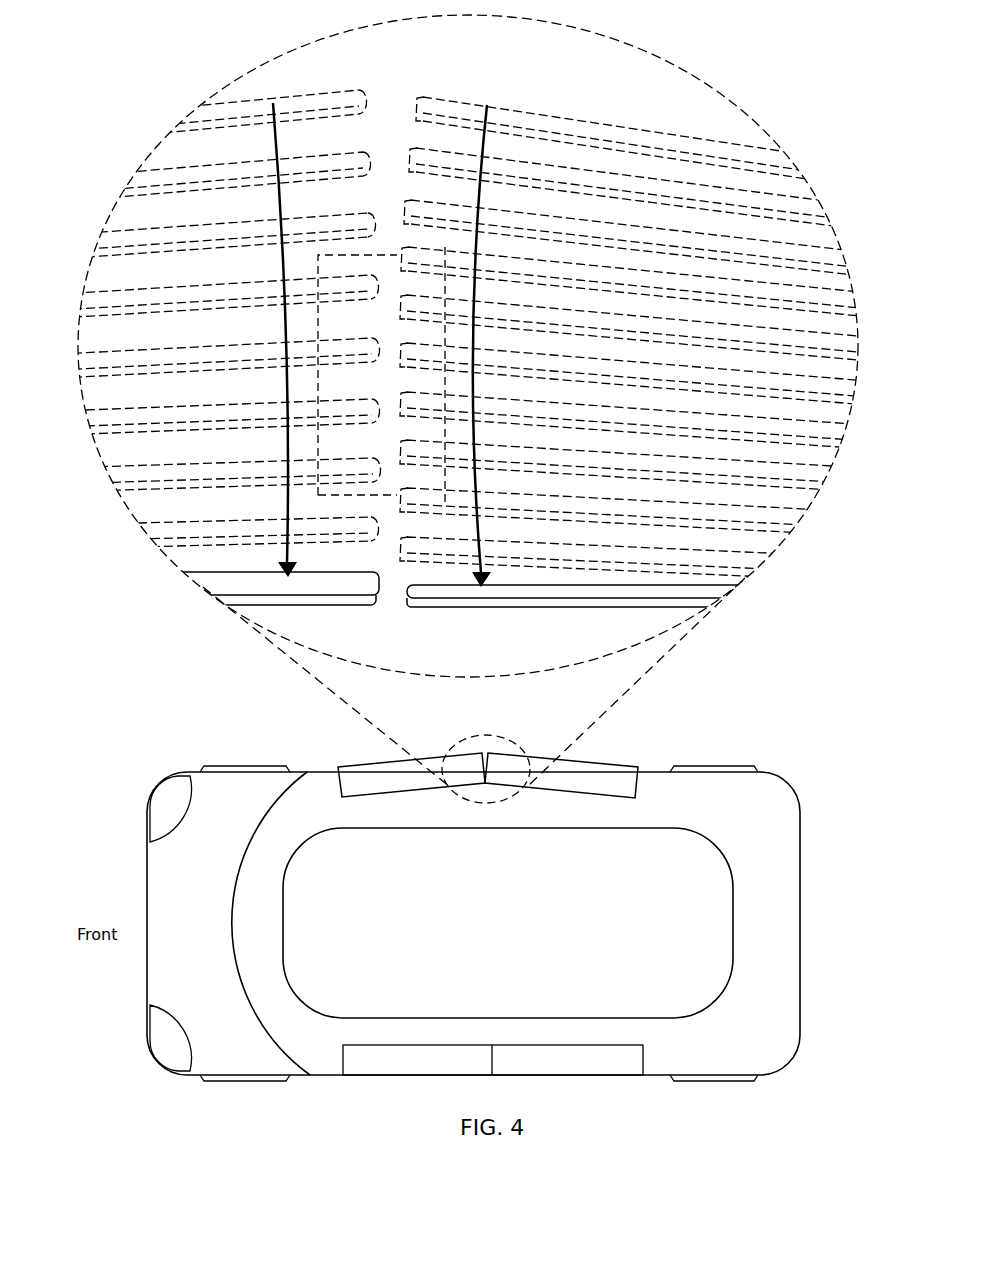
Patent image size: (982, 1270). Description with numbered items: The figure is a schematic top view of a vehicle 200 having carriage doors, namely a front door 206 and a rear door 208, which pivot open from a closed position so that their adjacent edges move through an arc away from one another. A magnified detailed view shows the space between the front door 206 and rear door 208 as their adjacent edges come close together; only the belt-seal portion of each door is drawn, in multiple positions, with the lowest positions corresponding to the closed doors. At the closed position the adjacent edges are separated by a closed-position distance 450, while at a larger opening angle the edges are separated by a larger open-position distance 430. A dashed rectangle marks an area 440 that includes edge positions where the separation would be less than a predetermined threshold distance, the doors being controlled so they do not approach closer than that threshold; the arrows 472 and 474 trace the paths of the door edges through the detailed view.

The vehicle 200 is at (142, 736).
The front door 206 is at (388, 783).
The rear door 208 is at (617, 783).
The open-position distance 430 is at (382, 115).
The area 440 is at (318, 323).
The closed-position distance 450 is at (395, 598).
The first airflow path 472 is at (273, 155).
The second airflow path 474 is at (485, 147).